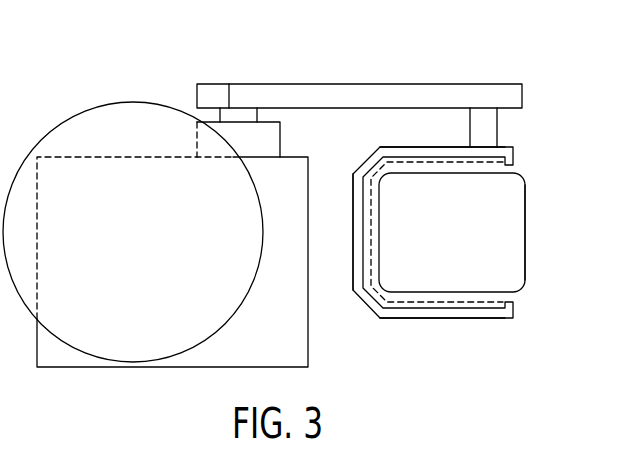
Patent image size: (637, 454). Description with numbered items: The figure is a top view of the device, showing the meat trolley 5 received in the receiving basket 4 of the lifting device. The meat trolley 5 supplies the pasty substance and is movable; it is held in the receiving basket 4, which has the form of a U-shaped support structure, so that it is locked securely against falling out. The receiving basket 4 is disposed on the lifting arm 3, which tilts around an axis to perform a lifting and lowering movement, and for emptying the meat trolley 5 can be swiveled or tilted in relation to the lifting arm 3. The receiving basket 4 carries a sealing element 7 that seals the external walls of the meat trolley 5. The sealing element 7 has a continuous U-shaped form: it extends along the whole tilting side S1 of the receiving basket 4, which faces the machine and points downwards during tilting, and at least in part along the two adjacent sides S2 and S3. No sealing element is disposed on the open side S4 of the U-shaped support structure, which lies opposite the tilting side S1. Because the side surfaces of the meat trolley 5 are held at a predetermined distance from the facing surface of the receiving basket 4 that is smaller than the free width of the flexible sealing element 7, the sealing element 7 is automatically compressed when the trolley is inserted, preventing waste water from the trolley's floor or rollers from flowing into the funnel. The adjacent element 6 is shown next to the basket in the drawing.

The lifting arm 3 is at (457, 84).
The receiving basket 4 is at (463, 320).
The meat trolley 5 is at (518, 272).
The conveying unit with wheel 6 is at (178, 332).
The sealing element 7 is at (432, 296).
The tilting side S1 is at (353, 227).
The side adjacent to the tilting side S2 is at (392, 319).
The side adjacent to the tilting side S3 is at (392, 147).
The open side S4 is at (526, 228).